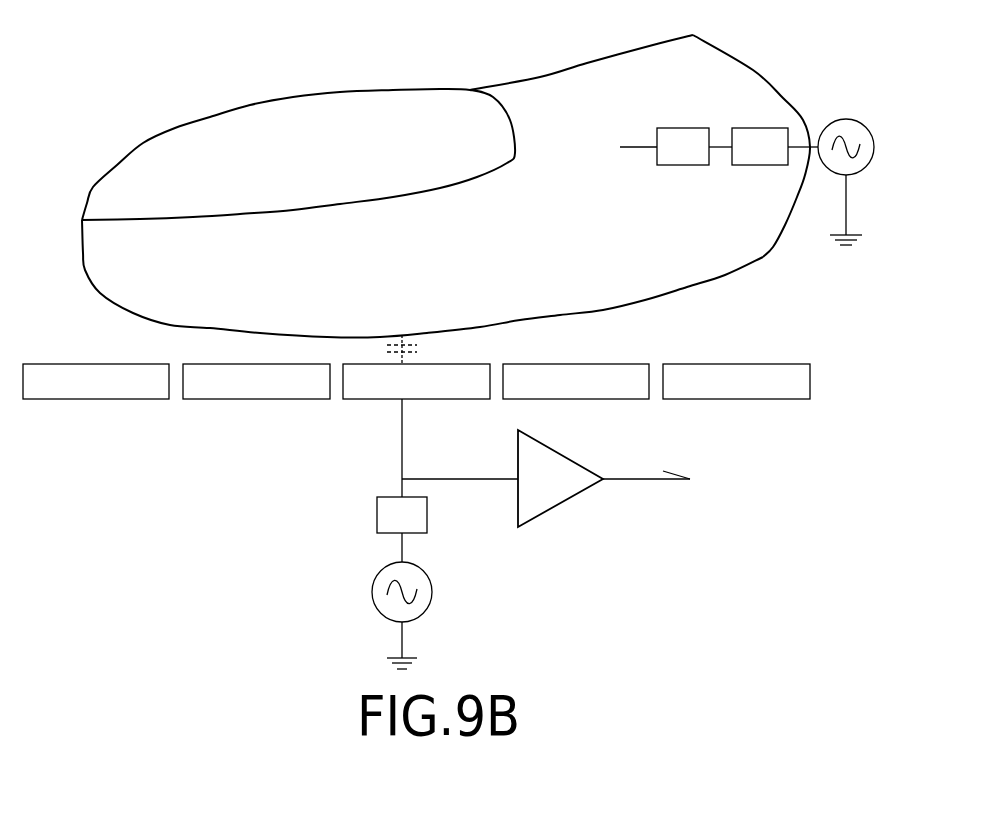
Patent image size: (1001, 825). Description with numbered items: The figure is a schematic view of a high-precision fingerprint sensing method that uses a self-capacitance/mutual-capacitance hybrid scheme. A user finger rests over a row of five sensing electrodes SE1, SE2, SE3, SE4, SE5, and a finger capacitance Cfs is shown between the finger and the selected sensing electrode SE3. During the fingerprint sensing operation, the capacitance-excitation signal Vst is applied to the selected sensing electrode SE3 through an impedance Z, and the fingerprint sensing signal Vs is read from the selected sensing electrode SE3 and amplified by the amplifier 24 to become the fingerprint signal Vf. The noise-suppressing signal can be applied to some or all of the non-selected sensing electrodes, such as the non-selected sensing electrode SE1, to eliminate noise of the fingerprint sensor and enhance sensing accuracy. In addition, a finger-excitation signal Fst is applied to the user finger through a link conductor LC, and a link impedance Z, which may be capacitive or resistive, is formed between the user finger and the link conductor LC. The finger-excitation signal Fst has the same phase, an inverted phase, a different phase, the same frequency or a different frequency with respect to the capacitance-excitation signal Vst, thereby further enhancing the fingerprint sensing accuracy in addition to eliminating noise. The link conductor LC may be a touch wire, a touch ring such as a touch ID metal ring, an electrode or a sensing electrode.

The amplifier 24 is at (547, 498).
The finger-to-sensor capacitance Cfs is at (422, 347).
The finger-excitation signal Fst is at (868, 182).
The capacitance-excitation signal Vst is at (377, 615).
The fingerprint sensing signal Vs is at (460, 459).
The fingerprint signal Vf is at (646, 459).
The link impedance Z is at (683, 146).
The link conductor LC is at (760, 146).
The non-selected sensing electrode SE1 is at (96, 381).
The sensing electrode SE2 is at (256, 381).
The selected sensing electrode SE3 is at (416, 381).
The sensing electrode SE4 is at (576, 381).
The sensing electrode SE5 is at (736, 381).